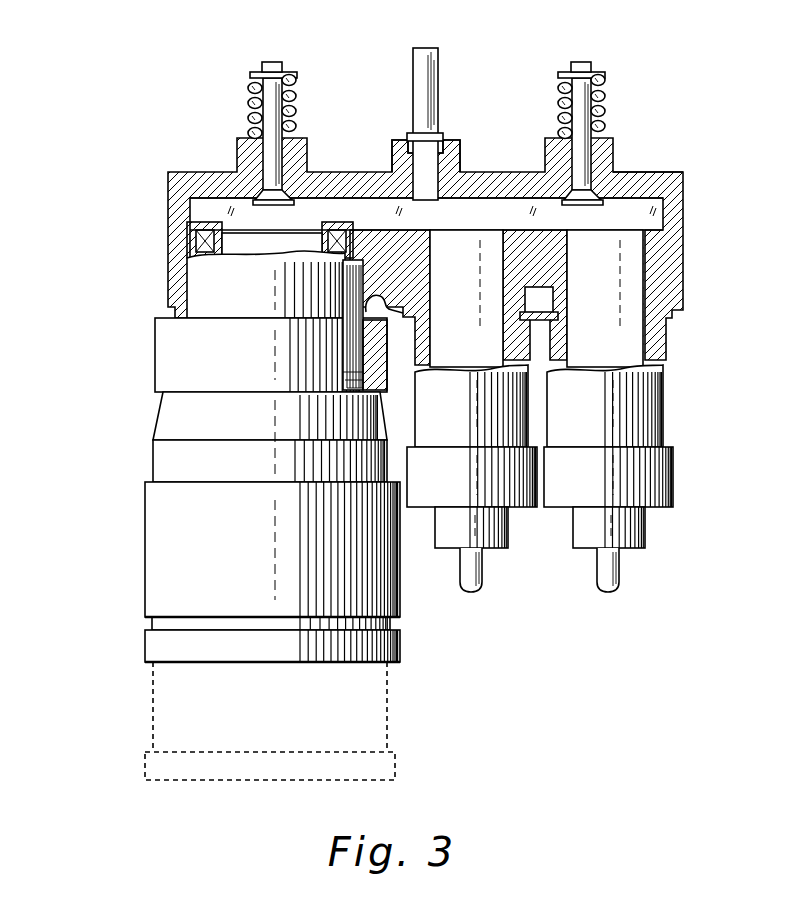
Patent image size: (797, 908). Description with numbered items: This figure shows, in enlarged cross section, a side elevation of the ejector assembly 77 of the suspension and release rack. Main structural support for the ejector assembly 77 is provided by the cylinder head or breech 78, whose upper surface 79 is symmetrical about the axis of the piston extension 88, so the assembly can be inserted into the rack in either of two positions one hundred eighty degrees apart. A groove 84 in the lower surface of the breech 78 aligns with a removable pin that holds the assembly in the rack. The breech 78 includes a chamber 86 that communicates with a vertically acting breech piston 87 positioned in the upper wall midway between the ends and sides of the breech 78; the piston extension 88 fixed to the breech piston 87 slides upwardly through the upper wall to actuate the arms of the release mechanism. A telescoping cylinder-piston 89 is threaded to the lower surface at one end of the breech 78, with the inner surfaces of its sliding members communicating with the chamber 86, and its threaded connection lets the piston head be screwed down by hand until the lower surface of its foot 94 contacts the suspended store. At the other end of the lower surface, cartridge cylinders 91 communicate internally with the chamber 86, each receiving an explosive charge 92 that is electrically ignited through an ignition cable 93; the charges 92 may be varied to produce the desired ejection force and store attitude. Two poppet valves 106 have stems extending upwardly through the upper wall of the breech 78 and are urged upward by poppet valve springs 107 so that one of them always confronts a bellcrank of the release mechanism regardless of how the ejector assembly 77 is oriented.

The ejector assembly 77 is at (394, 427).
The breech 78 is at (683, 208).
The upper surface of the breech 79 is at (650, 172).
The groove 84 is at (376, 325).
The chamber 86 is at (456, 221).
The breech piston 87 is at (405, 187).
The piston extension 88 is at (430, 72).
The cylinder-piston 89 is at (225, 526).
The cartridge cylinder 91 is at (544, 411).
The explosive charge 92 is at (442, 326).
The ignition cable 93 is at (472, 570).
The foot 94 is at (232, 660).
The poppet valve 106 is at (272, 62).
The poppet valve spring 107 is at (255, 105).